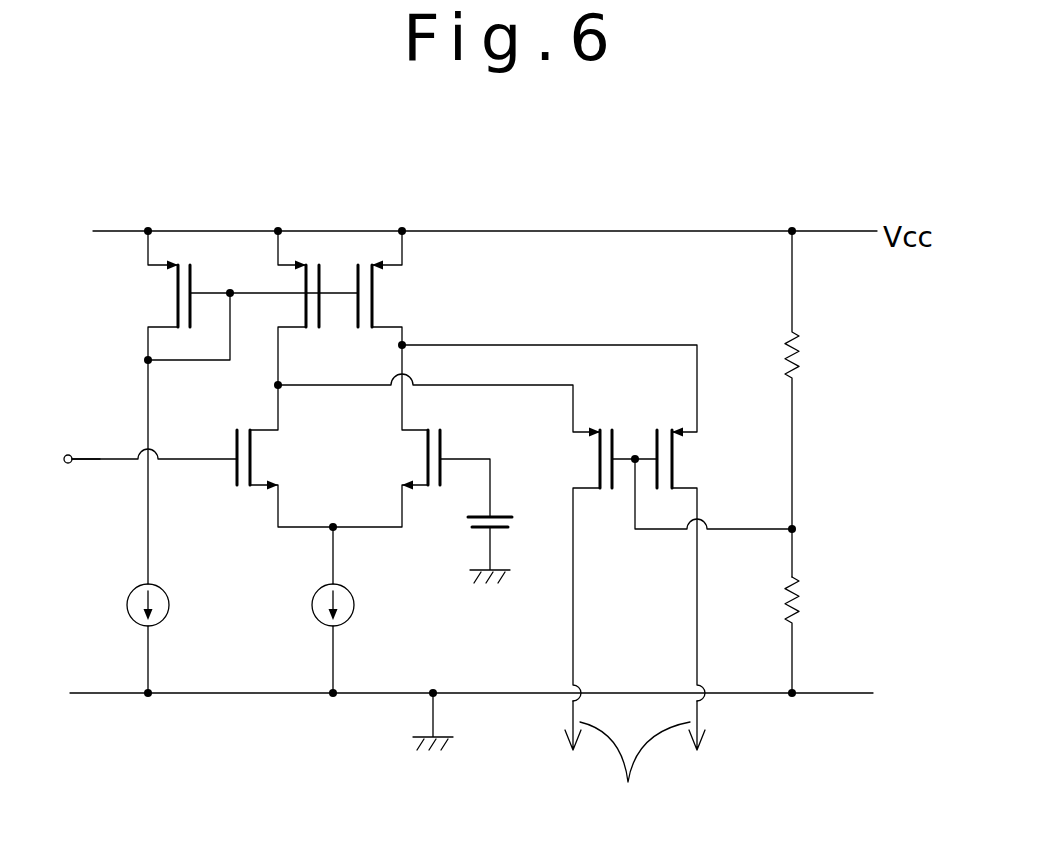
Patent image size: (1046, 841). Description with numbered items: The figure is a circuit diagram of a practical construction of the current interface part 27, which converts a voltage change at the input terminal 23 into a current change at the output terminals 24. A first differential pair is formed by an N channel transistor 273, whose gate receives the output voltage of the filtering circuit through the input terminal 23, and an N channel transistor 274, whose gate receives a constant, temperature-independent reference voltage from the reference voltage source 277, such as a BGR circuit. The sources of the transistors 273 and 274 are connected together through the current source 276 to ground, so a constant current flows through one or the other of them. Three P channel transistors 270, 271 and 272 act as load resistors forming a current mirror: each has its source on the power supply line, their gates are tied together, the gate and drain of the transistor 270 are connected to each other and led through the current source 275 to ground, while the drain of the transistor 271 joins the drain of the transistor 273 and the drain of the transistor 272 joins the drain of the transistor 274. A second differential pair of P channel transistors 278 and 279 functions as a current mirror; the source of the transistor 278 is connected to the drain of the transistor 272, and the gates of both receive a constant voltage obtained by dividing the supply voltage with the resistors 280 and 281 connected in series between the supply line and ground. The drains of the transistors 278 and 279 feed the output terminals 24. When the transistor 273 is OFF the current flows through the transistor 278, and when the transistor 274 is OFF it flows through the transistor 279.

The current interface part 27 is at (476, 203).
The input terminal 23 is at (68, 465).
The output terminals 24 is at (635, 760).
The P channel transistor 270 is at (160, 290).
The P channel transistor 271 is at (282, 305).
The P channel transistor 272 is at (390, 293).
The N channel transistor 273 is at (270, 458).
The N channel transistor 274 is at (402, 458).
The current source 275 is at (169, 607).
The current source 276 is at (354, 607).
The reference voltage source 277 is at (470, 525).
The P channel transistor 278 is at (583, 458).
The P channel transistor 279 is at (687, 462).
The resistor 280 is at (800, 362).
The resistor 281 is at (800, 610).